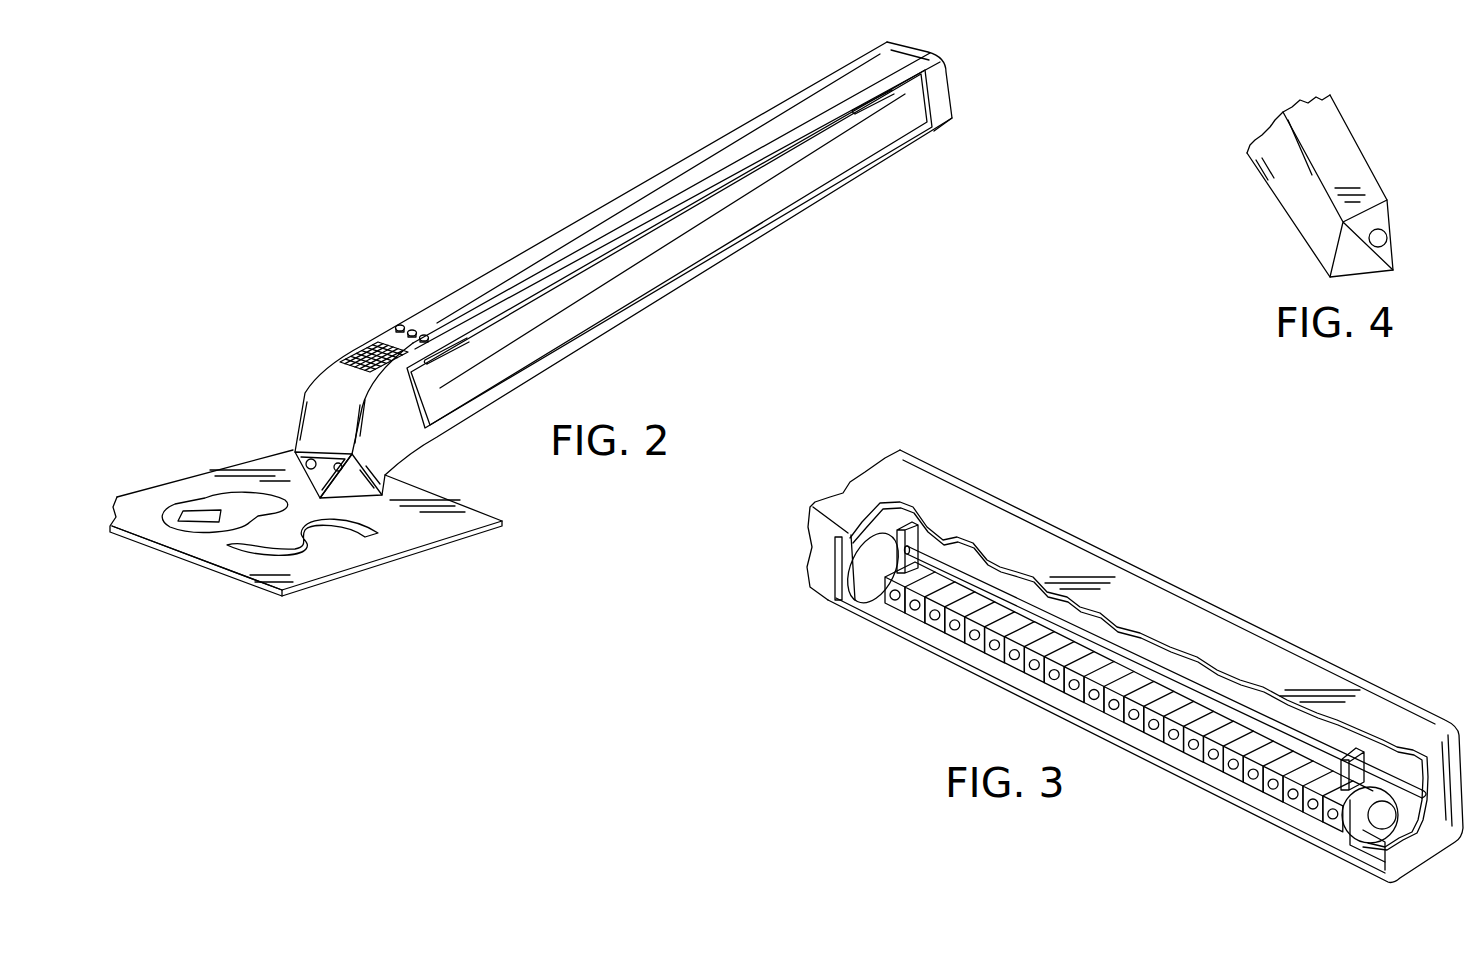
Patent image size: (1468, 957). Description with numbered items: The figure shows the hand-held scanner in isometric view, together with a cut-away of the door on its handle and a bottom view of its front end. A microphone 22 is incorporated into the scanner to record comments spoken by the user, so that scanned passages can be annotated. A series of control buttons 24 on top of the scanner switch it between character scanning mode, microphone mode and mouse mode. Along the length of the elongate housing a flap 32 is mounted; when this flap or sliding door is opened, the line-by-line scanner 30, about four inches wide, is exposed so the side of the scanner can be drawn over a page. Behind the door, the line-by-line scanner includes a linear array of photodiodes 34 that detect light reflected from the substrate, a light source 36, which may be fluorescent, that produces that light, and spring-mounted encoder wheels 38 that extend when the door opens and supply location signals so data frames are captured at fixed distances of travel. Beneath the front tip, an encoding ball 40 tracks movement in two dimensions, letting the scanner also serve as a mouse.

In FIG. 2, the microphone 22 is at (365, 352).
In FIG. 2, the control buttons 24 is at (422, 334).
In FIG. 2, the flap 32 is at (548, 340).
In FIG. 3, the line-by-line scanner 30 is at (956, 693).
In FIG. 3, the linear array of photodiodes 34 is at (1200, 765).
In FIG. 3, the light source 36 is at (1005, 593).
In FIG. 3, the encoder wheels 38 is at (867, 600).
In FIG. 4, the ball 40 is at (1385, 232).